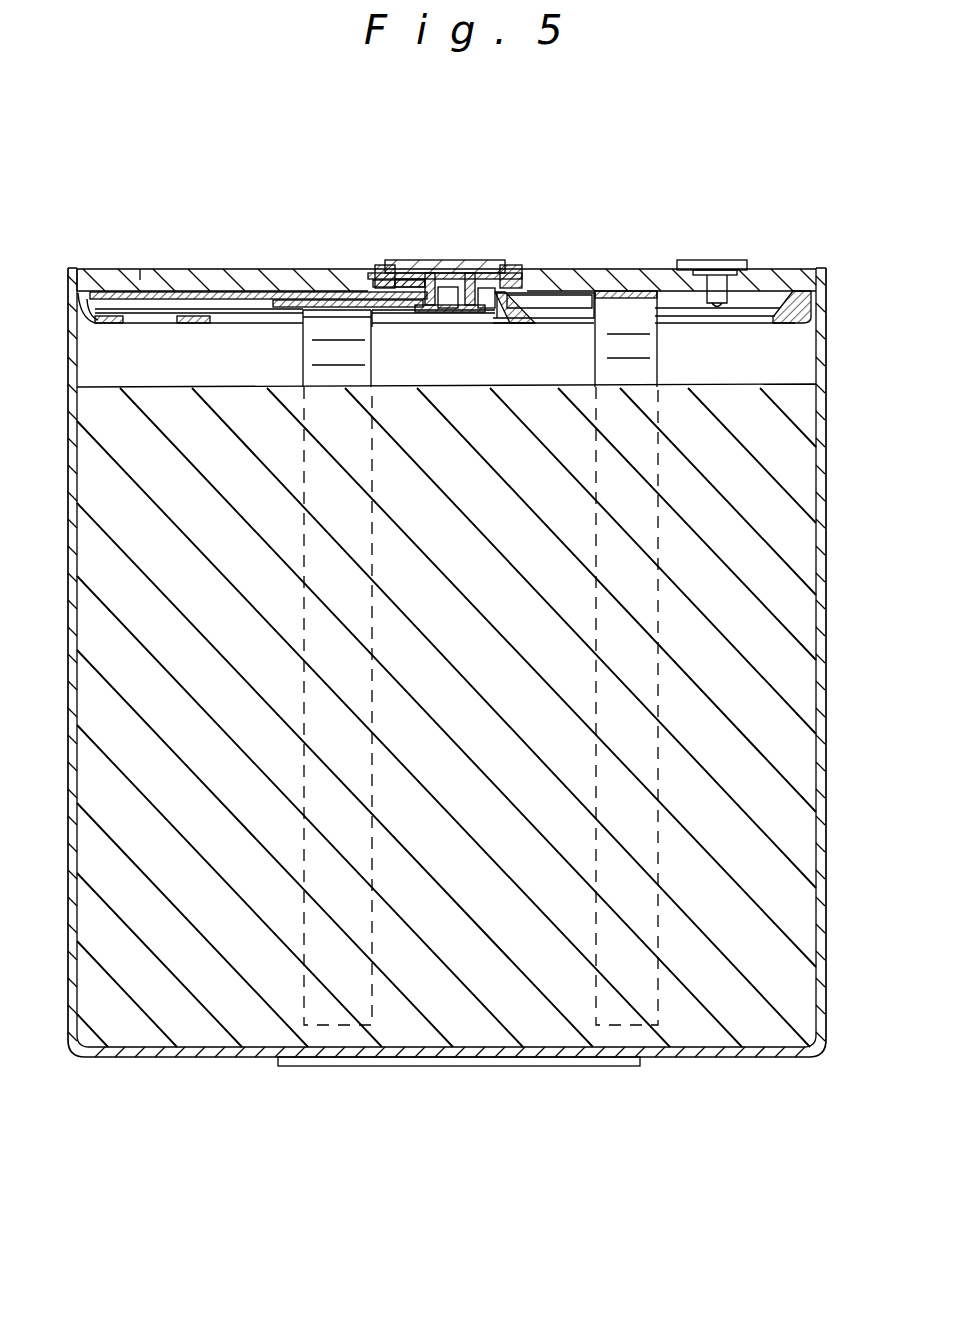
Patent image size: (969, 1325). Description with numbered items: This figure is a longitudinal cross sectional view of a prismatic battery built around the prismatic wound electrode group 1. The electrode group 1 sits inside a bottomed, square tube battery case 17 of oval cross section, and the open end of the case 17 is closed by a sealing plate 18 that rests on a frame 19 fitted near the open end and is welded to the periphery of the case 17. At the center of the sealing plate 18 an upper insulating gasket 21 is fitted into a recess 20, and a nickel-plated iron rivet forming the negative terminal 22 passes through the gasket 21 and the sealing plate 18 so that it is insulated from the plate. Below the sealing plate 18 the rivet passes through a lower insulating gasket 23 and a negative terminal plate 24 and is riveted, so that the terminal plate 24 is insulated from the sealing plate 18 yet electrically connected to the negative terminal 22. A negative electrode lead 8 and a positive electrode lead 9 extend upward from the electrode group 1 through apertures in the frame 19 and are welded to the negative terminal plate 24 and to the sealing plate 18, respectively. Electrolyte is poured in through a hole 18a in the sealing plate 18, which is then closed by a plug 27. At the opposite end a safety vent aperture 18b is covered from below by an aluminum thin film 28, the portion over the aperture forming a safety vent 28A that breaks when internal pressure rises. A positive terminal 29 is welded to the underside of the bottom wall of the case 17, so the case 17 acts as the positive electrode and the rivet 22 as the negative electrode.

The prismatic wound electrode group 1 is at (790, 748).
The negative electrode lead 8 is at (305, 358).
The positive electrode lead 9 is at (654, 357).
The battery case 17 is at (827, 585).
The sealing plate 18 is at (578, 281).
The hole 18a is at (718, 294).
The safety vent aperture 18b is at (143, 272).
The frame 19 is at (788, 323).
The recess 20 is at (507, 272).
The upper insulating gasket 21 is at (482, 290).
The negative terminal 22 is at (423, 260).
The lower insulating gasket 23 is at (350, 298).
The negative terminal plate 24 is at (295, 296).
The plug 27 is at (702, 262).
The aluminum thin film 28 is at (160, 300).
The safety vent 28A is at (172, 292).
The positive terminal 29 is at (465, 1068).